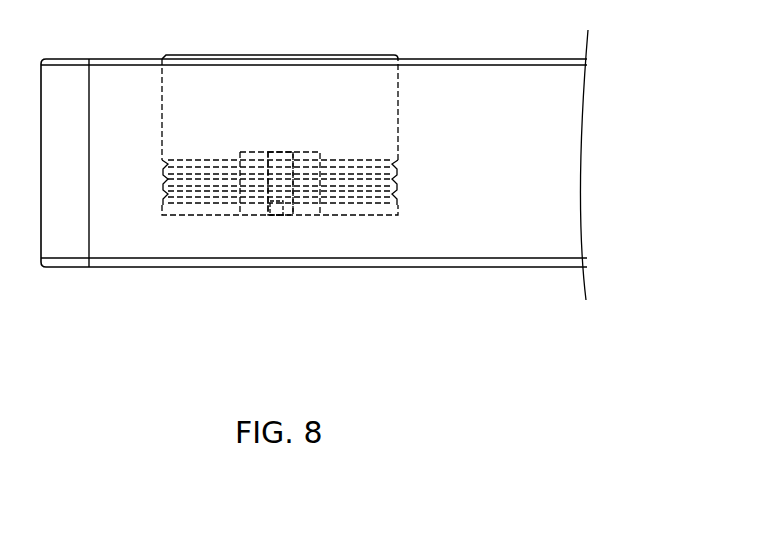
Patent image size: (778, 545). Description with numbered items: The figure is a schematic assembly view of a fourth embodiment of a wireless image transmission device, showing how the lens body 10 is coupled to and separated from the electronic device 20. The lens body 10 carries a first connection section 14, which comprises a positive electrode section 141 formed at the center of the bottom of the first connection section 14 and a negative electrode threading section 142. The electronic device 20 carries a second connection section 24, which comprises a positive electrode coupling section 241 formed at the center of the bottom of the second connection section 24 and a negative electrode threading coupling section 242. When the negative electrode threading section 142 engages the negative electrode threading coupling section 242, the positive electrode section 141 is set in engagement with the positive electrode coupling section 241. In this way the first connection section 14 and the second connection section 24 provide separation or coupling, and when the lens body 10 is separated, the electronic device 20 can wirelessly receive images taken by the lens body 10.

The lens body 10 is at (237, 88).
The electronic device 20 is at (527, 100).
The first connection section 14 is at (652, 102).
The positive electrode section 141 is at (285, 213).
The negative electrode threading section 142 is at (397, 160).
The second connection section 24 is at (342, 340).
The positive electrode coupling section 241 is at (276, 210).
The negative electrode threading coupling section 242 is at (183, 195).